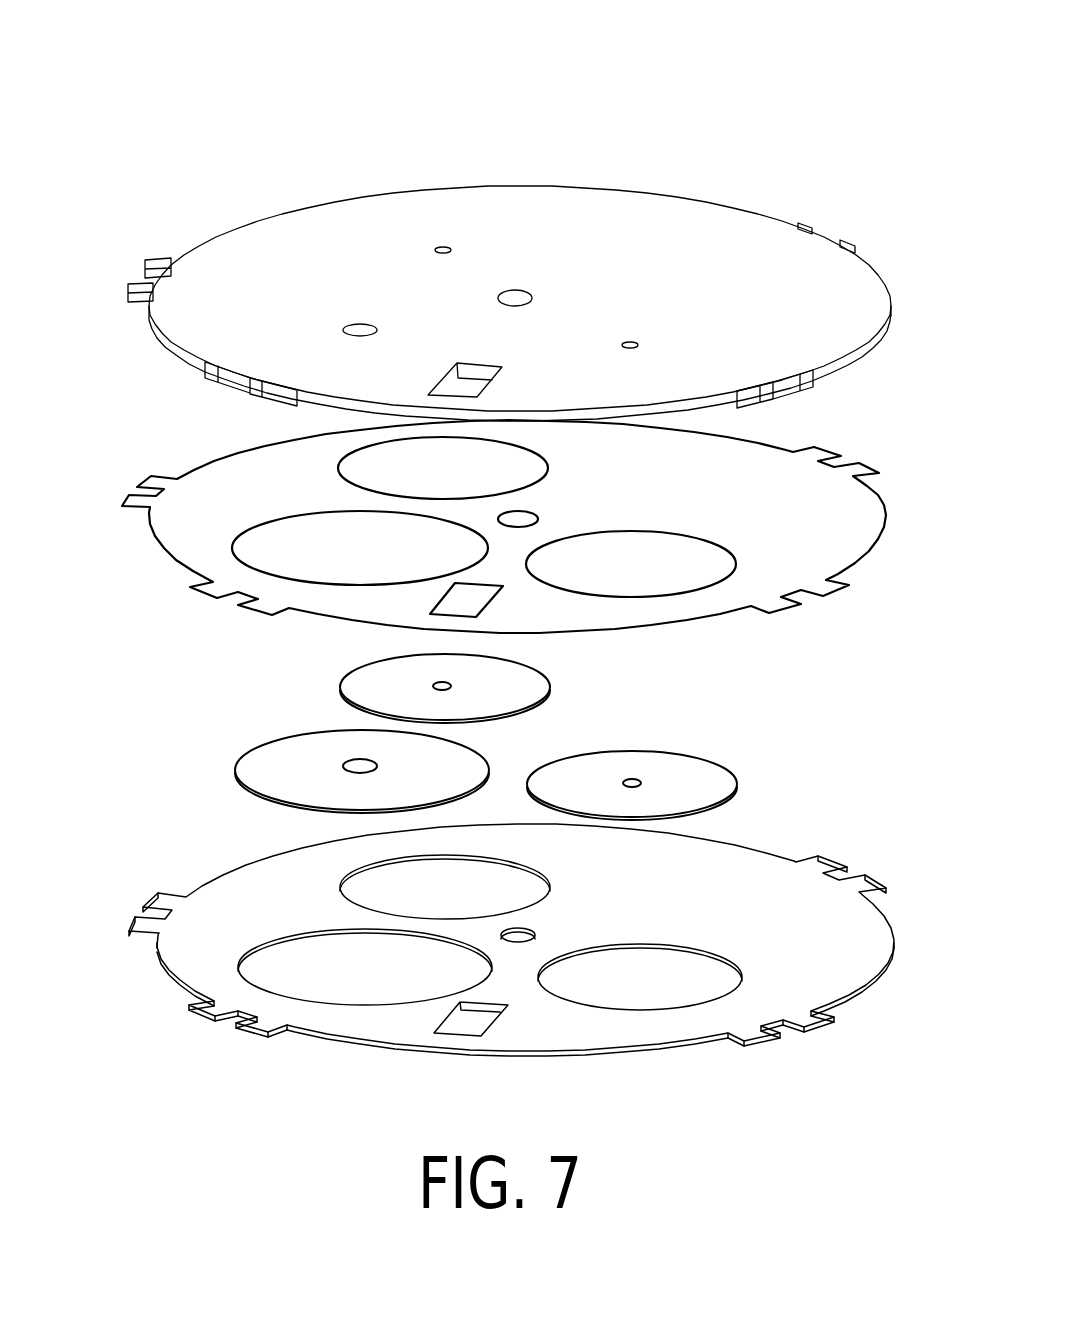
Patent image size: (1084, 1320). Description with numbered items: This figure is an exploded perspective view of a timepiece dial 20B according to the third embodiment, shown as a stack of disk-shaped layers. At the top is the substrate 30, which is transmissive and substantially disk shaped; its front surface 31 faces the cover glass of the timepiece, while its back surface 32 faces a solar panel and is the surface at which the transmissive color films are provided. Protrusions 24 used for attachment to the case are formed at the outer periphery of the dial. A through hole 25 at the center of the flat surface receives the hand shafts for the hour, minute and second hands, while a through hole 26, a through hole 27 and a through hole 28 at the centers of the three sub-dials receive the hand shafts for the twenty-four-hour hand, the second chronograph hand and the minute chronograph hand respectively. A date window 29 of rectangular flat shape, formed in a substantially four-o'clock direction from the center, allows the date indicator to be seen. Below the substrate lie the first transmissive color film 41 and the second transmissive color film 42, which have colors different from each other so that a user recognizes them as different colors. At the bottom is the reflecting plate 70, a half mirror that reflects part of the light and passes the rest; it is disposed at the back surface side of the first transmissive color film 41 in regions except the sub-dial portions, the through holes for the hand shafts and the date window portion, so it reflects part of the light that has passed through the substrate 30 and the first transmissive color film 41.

The timepiece dial 20B is at (770, 119).
The protrusions 24 is at (132, 290).
The through hole 25 is at (517, 295).
The through hole 26 is at (631, 343).
The through hole 27 is at (359, 327).
The through hole 28 is at (442, 247).
The date window 29 is at (482, 368).
The substrate 30 is at (686, 216).
The front surface 31 is at (600, 198).
The back surface 32 is at (870, 350).
The first transmissive color film 41 is at (845, 550).
The second transmissive color film 42 is at (578, 772).
The reflecting plate 70 is at (850, 962).